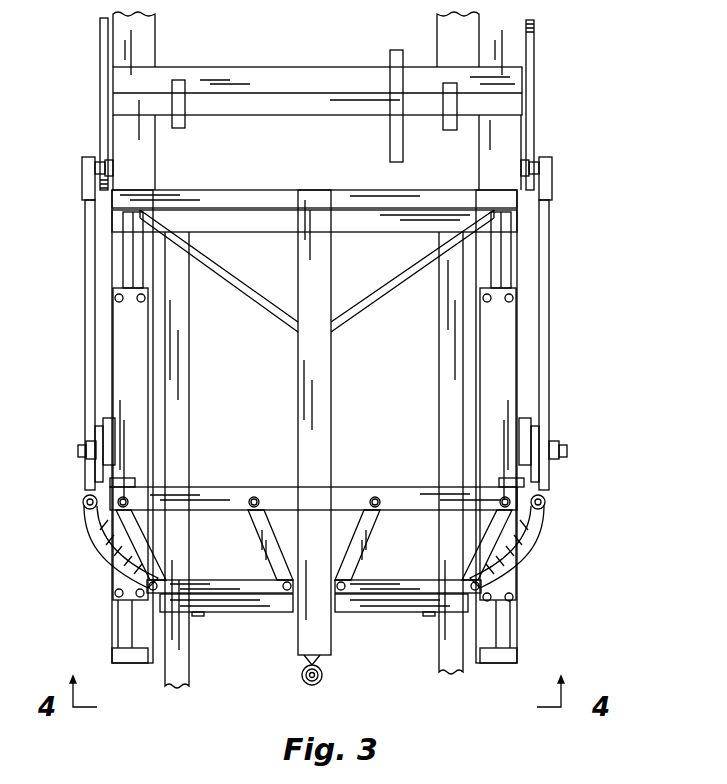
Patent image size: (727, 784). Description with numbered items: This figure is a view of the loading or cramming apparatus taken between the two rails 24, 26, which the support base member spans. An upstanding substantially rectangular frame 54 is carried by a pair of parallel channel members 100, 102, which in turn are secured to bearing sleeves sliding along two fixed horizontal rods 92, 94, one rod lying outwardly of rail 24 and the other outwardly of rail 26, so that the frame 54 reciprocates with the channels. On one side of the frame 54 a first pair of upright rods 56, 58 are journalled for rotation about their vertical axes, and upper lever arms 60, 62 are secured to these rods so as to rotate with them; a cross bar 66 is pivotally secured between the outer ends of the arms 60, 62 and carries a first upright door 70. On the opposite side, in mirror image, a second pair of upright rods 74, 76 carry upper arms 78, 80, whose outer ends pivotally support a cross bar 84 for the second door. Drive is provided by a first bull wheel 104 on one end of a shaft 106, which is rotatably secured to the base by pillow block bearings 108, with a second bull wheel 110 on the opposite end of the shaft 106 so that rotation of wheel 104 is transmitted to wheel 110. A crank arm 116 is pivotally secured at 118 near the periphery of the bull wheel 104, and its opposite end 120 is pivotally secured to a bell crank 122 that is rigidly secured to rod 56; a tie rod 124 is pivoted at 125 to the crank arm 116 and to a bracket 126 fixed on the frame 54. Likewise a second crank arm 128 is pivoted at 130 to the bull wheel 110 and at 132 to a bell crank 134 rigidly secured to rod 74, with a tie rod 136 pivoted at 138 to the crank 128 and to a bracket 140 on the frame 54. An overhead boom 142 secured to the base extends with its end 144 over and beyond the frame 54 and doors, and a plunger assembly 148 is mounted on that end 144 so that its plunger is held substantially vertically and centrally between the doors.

The rail 24 is at (170, 676).
The rail 26 is at (452, 652).
The frame 54 is at (416, 494).
The upright rod 56 is at (120, 515).
The upright rod 58 is at (257, 496).
The upper lever arm 60 is at (140, 550).
The upper lever arm 62 is at (268, 540).
The cross bar 66 is at (214, 587).
The first upright door 70 is at (259, 612).
The upright rod 74 is at (540, 497).
The upright rod 76 is at (373, 496).
The upper arm 78 is at (505, 590).
The upper arm 80 is at (358, 548).
The cross bar 84 is at (414, 598).
The horizontal rod 92 is at (130, 268).
The horizontal rod 94 is at (503, 262).
The channel member 100 is at (130, 333).
The channel member 102 is at (498, 330).
The first bull wheel 104 is at (104, 79).
The shaft 106 is at (287, 105).
The pillow block bearing 108 is at (180, 80).
The second bull wheel 110 is at (532, 45).
The crank arm 116 is at (112, 233).
The pivot 118 is at (82, 168).
The crank arm end 120 is at (84, 496).
The bell crank 122 is at (84, 506).
The tie rod 124 is at (98, 425).
The pivot 125 is at (78, 448).
The bracket 126 is at (115, 445).
The second crank arm 128 is at (532, 222).
The pivot 130 is at (552, 170).
The pivot 132 is at (546, 503).
The bell crank 134 is at (528, 528).
The tie rod 136 is at (530, 422).
The pivot 138 is at (558, 448).
The bracket 140 is at (527, 440).
The boom 142 is at (320, 383).
The boom end 144 is at (318, 632).
The plunger assembly 148 is at (298, 680).